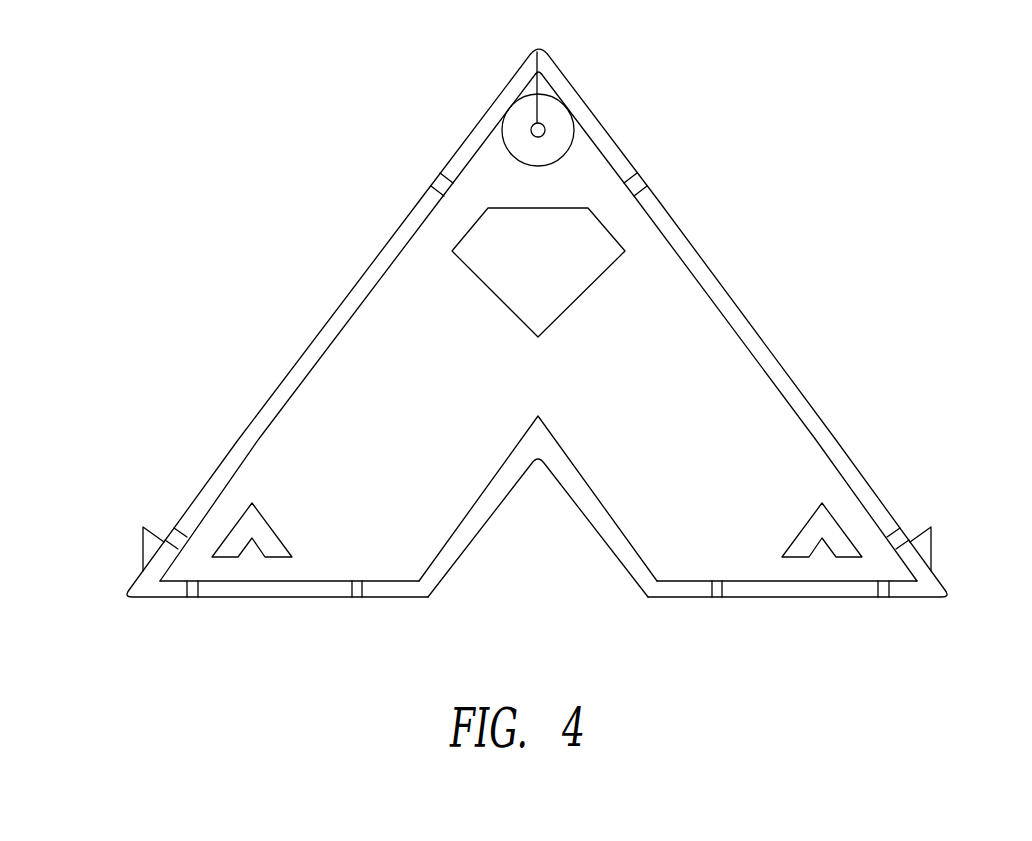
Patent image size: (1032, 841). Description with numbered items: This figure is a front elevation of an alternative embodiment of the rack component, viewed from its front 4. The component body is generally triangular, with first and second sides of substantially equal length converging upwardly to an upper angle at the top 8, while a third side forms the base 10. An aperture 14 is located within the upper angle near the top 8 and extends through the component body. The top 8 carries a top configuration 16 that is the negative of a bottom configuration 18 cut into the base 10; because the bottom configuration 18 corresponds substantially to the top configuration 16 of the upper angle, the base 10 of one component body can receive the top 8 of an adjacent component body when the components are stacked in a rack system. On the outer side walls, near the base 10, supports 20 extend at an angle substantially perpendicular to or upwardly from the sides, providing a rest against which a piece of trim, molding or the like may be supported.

The front 4 is at (663, 280).
The top 8 is at (571, 87).
The base 10 is at (765, 599).
The aperture 14 is at (537, 52).
The top configuration 16 is at (468, 135).
The bottom configuration 18 is at (478, 532).
The supports 20 is at (142, 540).